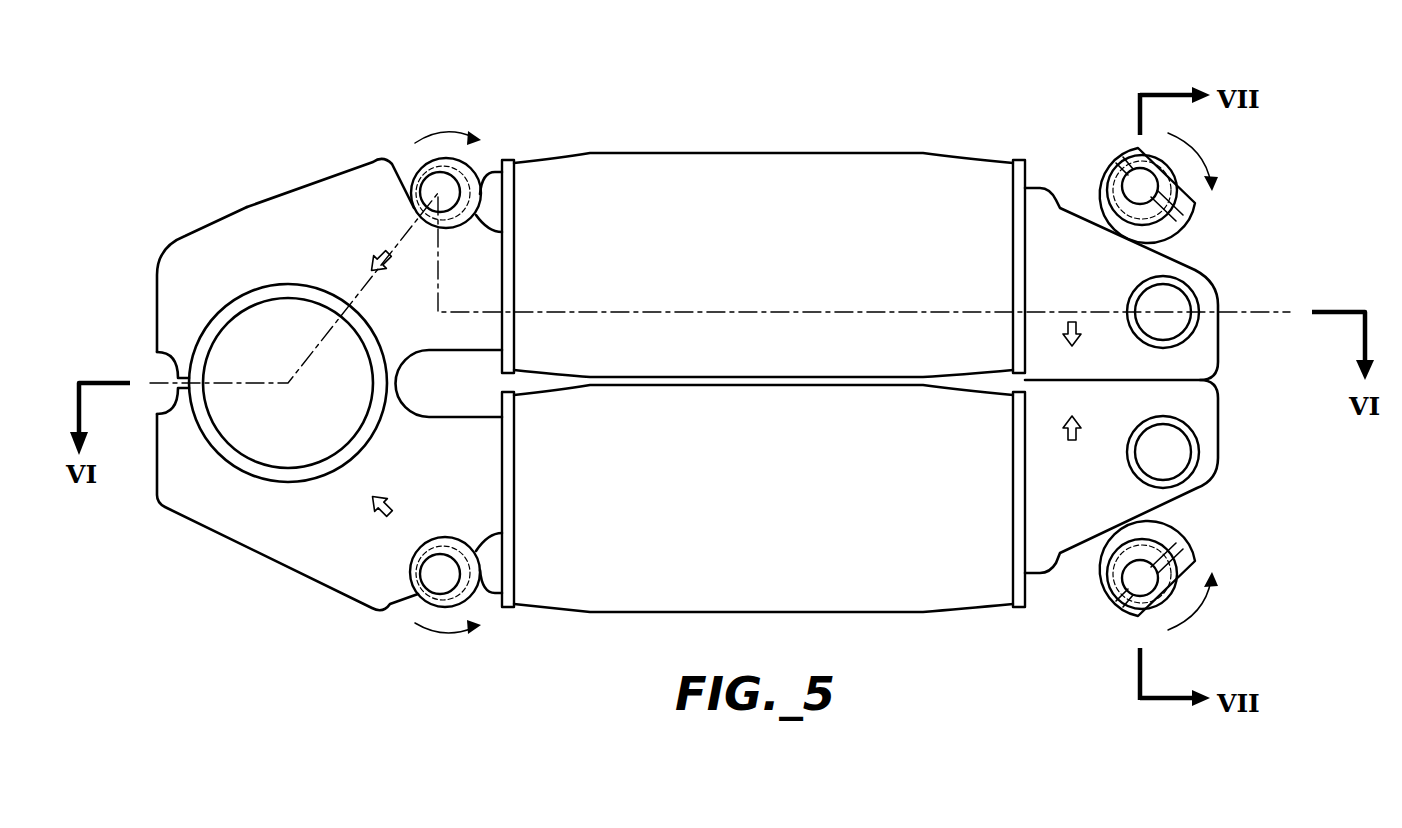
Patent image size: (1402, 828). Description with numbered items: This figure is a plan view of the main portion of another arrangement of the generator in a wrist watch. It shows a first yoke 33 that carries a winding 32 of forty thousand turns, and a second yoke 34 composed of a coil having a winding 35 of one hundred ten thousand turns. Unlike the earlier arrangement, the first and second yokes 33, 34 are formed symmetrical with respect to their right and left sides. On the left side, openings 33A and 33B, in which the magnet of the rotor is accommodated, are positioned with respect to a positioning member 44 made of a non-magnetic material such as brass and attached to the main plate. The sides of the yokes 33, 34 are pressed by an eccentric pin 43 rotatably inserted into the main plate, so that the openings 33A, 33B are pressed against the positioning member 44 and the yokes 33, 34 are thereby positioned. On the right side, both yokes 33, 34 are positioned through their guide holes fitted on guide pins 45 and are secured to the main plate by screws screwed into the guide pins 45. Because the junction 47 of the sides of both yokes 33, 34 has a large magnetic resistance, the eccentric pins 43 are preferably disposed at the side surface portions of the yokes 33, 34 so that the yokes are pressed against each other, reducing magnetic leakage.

The winding 32 is at (793, 602).
The first yoke 33 is at (350, 580).
The opening 33A is at (292, 482).
The opening 33B is at (225, 303).
The second yoke 34 is at (317, 198).
The winding 35 is at (748, 162).
The eccentric pin 43 is at (470, 163).
The positioning member 44 is at (225, 448).
The guide pin 45 is at (1173, 297).
The junction 47 is at (1183, 379).